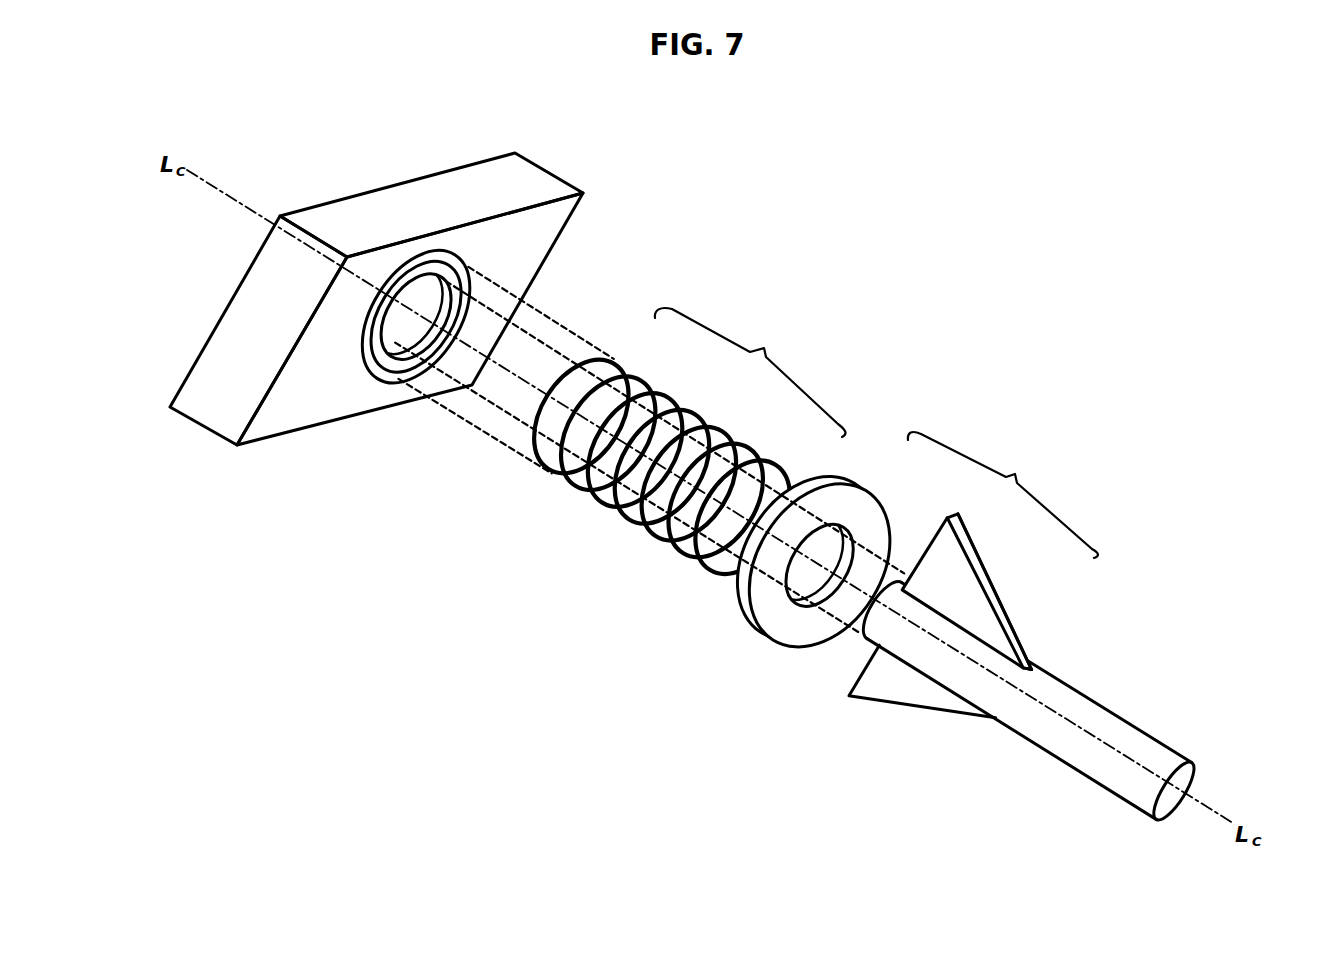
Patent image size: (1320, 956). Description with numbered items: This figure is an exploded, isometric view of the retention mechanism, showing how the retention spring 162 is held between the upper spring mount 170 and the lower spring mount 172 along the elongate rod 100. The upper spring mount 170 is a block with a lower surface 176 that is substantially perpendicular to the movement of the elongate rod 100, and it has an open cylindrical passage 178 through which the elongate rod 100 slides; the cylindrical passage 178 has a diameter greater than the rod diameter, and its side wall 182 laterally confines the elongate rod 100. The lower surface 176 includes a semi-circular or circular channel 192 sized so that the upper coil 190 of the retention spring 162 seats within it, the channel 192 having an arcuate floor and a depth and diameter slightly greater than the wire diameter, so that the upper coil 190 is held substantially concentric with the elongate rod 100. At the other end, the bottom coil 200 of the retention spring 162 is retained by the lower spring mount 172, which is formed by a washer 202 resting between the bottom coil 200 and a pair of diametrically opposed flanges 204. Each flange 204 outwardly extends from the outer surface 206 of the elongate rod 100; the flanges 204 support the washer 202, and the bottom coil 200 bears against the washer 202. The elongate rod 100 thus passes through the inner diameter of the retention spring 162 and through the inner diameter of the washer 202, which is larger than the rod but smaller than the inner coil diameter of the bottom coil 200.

The elongate rod 100 is at (1112, 703).
The retention spring 162 is at (750, 372).
The upper spring mount 170 is at (467, 178).
The lower spring mount 172 is at (1003, 495).
The lower surface 176 is at (263, 425).
The cylindrical passage 178 is at (393, 322).
The side wall 182 is at (423, 310).
The upper coil 190 is at (608, 362).
The channel 192 is at (377, 367).
The bottom coil 200 is at (781, 464).
The washer 202 is at (863, 488).
The flanges 204 is at (988, 580).
The outer surface 206 is at (1040, 667).